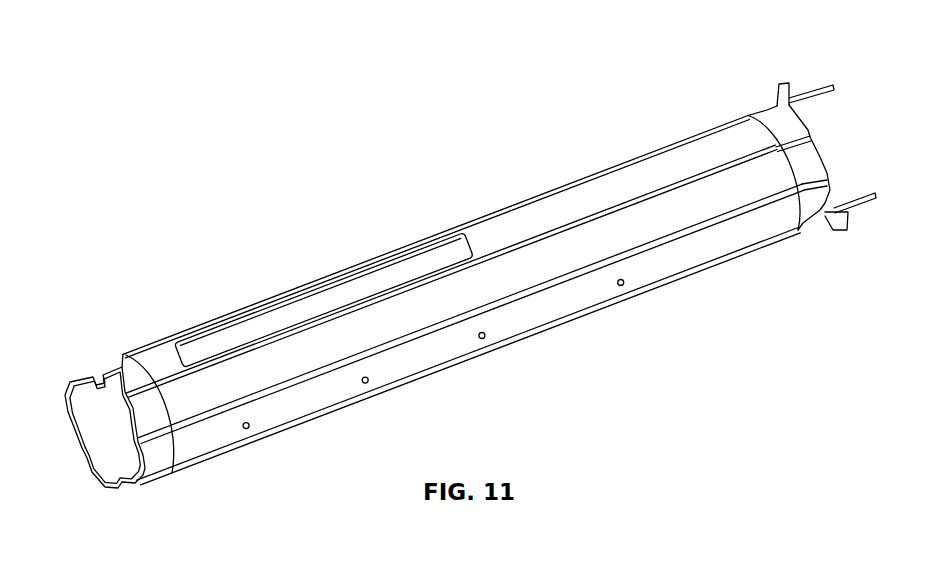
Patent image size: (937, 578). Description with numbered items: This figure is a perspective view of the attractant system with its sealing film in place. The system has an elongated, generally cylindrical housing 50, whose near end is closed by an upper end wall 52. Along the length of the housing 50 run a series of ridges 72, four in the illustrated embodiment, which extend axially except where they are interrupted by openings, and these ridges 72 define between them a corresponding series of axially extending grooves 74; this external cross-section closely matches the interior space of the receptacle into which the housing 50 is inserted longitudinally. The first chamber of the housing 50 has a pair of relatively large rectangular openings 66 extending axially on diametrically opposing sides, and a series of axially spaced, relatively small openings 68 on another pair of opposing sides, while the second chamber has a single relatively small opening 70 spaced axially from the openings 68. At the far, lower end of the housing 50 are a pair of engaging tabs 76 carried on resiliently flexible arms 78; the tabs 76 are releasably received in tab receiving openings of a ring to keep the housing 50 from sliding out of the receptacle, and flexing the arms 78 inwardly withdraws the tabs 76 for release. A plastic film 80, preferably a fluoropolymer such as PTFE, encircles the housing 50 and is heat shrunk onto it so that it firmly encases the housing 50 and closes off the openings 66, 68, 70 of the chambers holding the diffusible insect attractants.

The housing 50 is at (478, 230).
The upper end wall 52 is at (123, 463).
The rectangular openings 66 is at (221, 342).
The small openings 68 is at (248, 429).
The opening 70 is at (620, 286).
The ridges 72 is at (590, 190).
The grooves 74 is at (627, 225).
The engaging tabs 76 is at (786, 82).
The resiliently flexible arms 78 is at (818, 97).
The plastic film 80 is at (522, 202).